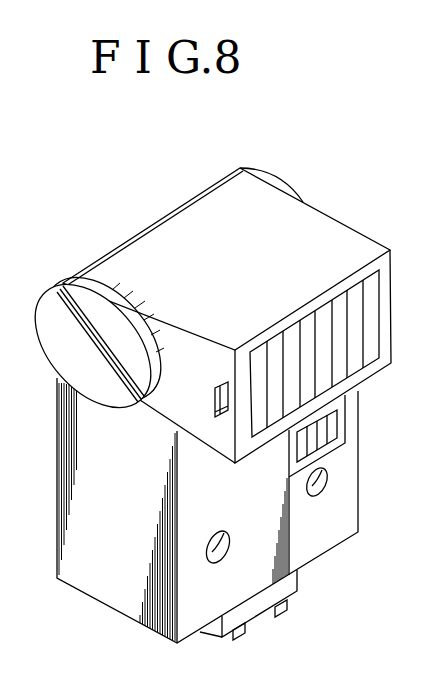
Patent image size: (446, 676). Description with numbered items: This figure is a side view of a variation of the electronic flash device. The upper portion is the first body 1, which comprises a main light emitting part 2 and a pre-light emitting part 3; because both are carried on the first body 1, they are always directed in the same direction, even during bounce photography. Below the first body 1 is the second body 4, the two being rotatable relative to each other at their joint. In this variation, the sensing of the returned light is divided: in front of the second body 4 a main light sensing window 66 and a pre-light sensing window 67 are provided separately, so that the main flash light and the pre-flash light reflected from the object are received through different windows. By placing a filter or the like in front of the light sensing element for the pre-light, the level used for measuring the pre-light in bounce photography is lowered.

The first body 1 is at (352, 232).
The main light emitting part 2 is at (376, 313).
The pre-light emitting part 3 is at (330, 422).
The second body 4 is at (87, 476).
The main light sensing window 66 is at (331, 477).
The pre-light sensing window 67 is at (213, 563).